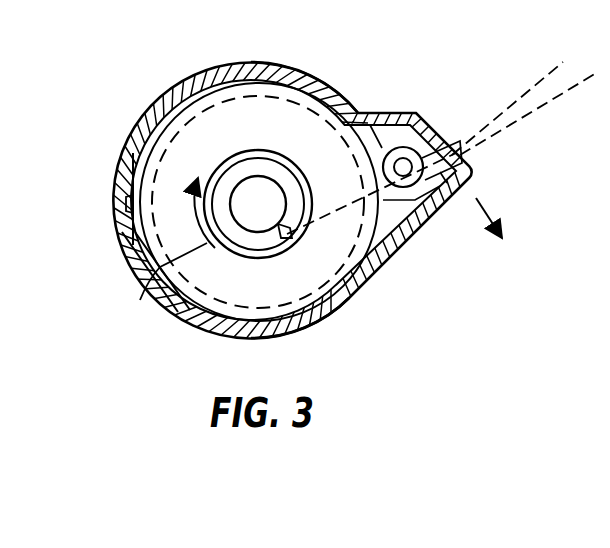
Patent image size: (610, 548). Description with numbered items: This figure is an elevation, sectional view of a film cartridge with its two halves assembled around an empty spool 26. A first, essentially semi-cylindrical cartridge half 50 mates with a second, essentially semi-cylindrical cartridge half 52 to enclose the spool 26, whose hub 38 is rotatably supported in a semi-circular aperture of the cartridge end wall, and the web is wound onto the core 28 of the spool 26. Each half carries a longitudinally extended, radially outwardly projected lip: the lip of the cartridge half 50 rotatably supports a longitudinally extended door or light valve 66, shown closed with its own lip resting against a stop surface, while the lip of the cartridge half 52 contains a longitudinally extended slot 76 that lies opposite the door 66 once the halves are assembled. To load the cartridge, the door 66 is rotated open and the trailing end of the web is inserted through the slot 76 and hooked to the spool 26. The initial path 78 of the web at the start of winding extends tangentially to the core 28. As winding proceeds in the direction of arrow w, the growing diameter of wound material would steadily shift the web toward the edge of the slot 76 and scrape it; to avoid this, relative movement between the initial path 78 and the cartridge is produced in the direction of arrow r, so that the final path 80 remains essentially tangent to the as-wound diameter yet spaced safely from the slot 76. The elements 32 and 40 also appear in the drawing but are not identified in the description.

The spool 26 is at (143, 238).
The core 28 is at (222, 247).
The housing 32 is at (238, 107).
The hub 38 is at (259, 152).
The key 40 is at (271, 242).
The cartridge half 50 is at (332, 313).
The cartridge half 52 is at (312, 80).
The door or light valve 66 is at (392, 128).
The slot 76 is at (453, 136).
The initial path 78 is at (566, 90).
The final path 80 is at (514, 102).
The arrow r is at (483, 212).
The arrow w is at (163, 287).